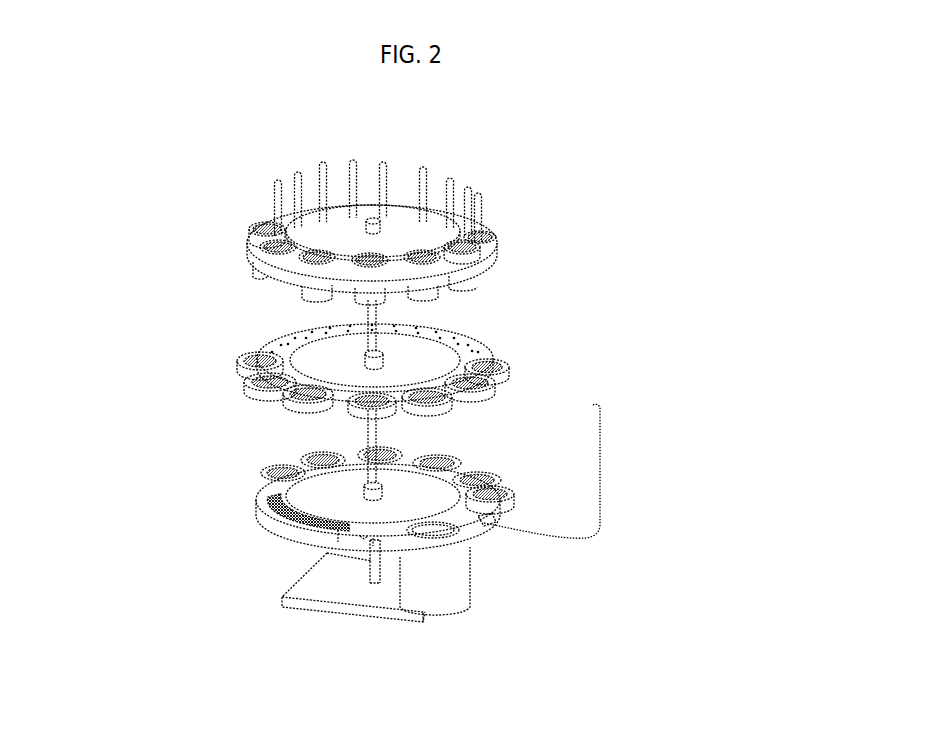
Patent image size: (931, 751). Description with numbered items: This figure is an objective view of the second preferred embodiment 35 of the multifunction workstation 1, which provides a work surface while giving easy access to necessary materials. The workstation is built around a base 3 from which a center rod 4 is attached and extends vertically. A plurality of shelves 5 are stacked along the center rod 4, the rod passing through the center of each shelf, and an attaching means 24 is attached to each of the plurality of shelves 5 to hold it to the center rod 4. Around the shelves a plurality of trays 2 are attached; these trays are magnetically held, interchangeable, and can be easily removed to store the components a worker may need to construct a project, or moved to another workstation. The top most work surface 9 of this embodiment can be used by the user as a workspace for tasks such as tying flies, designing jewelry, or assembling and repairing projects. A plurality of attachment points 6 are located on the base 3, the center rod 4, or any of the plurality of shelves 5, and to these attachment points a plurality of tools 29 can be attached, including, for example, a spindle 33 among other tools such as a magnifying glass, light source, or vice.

The multifunction workstation 1 is at (470, 365).
The second preferred embodiment 35 is at (705, 173).
The plurality of trays 2 is at (432, 207).
The base 3 is at (325, 583).
The center rod 4 is at (383, 440).
The plurality of shelves 5 is at (335, 233).
The plurality of attachment points 6 is at (482, 523).
The top most work surface 9 is at (343, 214).
The attaching means 24 is at (382, 225).
The plurality of tools 29 is at (584, 444).
The spindle 33 is at (602, 408).